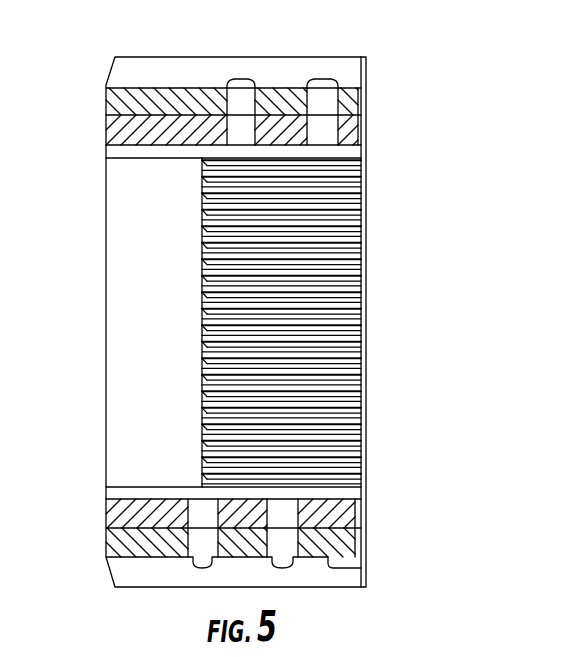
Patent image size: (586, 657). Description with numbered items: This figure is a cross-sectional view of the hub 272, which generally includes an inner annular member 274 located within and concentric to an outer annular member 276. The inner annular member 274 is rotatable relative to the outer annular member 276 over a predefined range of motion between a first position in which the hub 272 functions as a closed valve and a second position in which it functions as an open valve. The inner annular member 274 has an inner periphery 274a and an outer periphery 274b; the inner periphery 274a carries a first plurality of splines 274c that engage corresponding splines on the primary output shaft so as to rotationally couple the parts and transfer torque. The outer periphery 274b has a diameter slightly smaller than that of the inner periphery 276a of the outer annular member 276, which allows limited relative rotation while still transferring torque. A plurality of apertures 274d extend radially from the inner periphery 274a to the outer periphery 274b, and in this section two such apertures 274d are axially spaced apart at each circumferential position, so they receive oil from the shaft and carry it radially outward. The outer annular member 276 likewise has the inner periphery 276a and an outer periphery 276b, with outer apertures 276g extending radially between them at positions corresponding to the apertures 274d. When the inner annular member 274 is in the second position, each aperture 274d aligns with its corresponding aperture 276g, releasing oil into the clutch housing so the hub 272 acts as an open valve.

The hub 272 is at (437, 78).
The inner annular member 274 is at (122, 124).
The inner periphery 274a is at (350, 326).
The outer periphery 274b is at (173, 118).
The first plurality of splines 274c is at (352, 358).
The apertures 274d is at (243, 132).
The outer annular member 276 is at (150, 100).
The inner periphery 276a is at (338, 535).
The outer periphery 276b is at (336, 567).
The outer apertures 276g is at (241, 97).